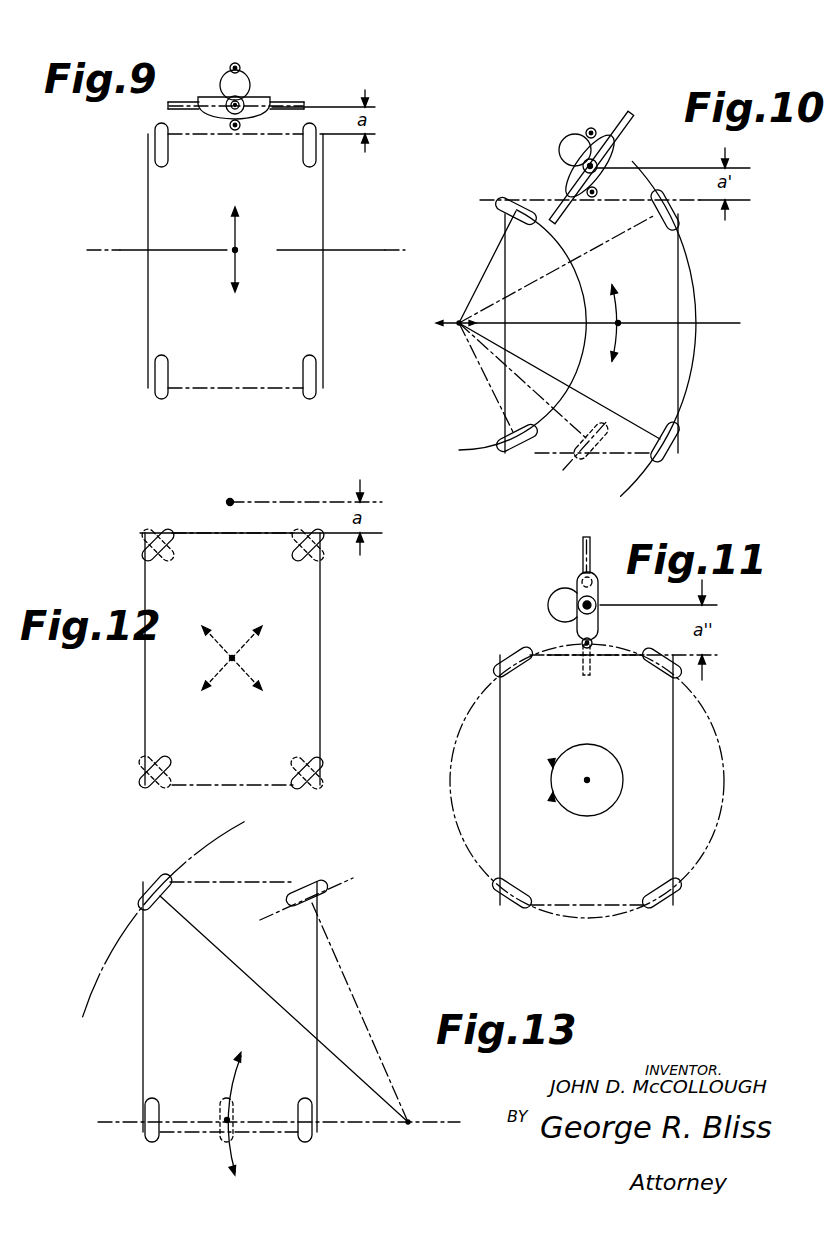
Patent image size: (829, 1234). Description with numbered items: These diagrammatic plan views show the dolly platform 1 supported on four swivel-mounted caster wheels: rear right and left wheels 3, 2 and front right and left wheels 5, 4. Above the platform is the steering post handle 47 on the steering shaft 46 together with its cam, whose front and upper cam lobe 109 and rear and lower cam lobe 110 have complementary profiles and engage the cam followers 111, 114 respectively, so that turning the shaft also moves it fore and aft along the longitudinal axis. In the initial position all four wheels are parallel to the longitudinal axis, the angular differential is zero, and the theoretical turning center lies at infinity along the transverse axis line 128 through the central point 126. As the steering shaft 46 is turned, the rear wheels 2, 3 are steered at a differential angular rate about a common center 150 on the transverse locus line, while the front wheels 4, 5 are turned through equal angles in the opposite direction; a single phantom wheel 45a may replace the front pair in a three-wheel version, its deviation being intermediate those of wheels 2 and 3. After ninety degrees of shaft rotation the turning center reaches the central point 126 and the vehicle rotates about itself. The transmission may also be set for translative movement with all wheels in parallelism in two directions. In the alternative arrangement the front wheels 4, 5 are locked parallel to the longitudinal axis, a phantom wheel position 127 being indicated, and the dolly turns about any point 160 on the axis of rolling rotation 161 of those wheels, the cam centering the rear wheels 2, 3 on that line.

In FIG. 9, the platform 1 is at (323, 252).
In FIG. 12, the platform 1 is at (320, 684).
In FIG. 11, the platform 1 is at (675, 803).
In FIG. 13, the platform 1 is at (140, 1022).
In FIG. 9, the rear left wheel 2 is at (316, 160).
In FIG. 10, the rear left wheel 2 is at (675, 222).
In FIG. 12, the rear left wheel 2 is at (322, 552).
In FIG. 11, the rear left wheel 2 is at (667, 676).
In FIG. 13, the rear left wheel 2 is at (318, 897).
In FIG. 9, the rear right wheel 3 is at (155, 160).
In FIG. 10, the rear right wheel 3 is at (509, 203).
In FIG. 12, the rear right wheel 3 is at (170, 543).
In FIG. 11, the rear right wheel 3 is at (505, 675).
In FIG. 13, the rear right wheel 3 is at (143, 897).
In FIG. 9, the front left wheel 4 is at (316, 378).
In FIG. 10, the front left wheel 4 is at (668, 455).
In FIG. 12, the front left wheel 4 is at (320, 770).
In FIG. 11, the front left wheel 4 is at (650, 895).
In FIG. 13, the front left wheel 4 is at (312, 1135).
In FIG. 9, the front right wheel 5 is at (157, 394).
In FIG. 10, the front right wheel 5 is at (511, 448).
In FIG. 12, the front right wheel 5 is at (155, 784).
In FIG. 11, the front right wheel 5 is at (514, 905).
In FIG. 13, the front right wheel 5 is at (147, 1140).
In FIG. 9, the steering shaft 46 is at (242, 100).
In FIG. 10, the steering shaft 46 is at (583, 166).
In FIG. 12, the steering shaft 46 is at (232, 498).
In FIG. 11, the steering shaft 46 is at (596, 607).
In FIG. 9, the steering post handle 47 is at (186, 104).
In FIG. 10, the steering post handle 47 is at (621, 112).
In FIG. 11, the steering post handle 47 is at (583, 548).
In FIG. 9, the front cam lobe 109 is at (264, 116).
In FIG. 10, the front cam lobe 109 is at (612, 147).
In FIG. 11, the front cam lobe 109 is at (592, 572).
In FIG. 9, the rear cam lobe 110 is at (224, 77).
In FIG. 10, the rear cam lobe 110 is at (560, 142).
In FIG. 11, the rear cam lobe 110 is at (552, 605).
In FIG. 9, the cam follower 111 is at (236, 130).
In FIG. 10, the cam follower 111 is at (593, 197).
In FIG. 11, the cam follower 111 is at (589, 648).
In FIG. 9, the cam follower 114 is at (240, 66).
In FIG. 10, the cam follower 114 is at (591, 128).
In FIG. 11, the cam follower 114 is at (578, 582).
In FIG. 9, the central point 126 is at (238, 250).
In FIG. 10, the central point 126 is at (621, 323).
In FIG. 12, the central point 126 is at (236, 659).
In FIG. 11, the central point 126 is at (589, 780).
In FIG. 13, the phantom wheel position 127 is at (230, 1118).
In FIG. 9, the transverse axis line 128 is at (105, 250).
In FIG. 10, the common center 150 is at (457, 327).
In FIG. 10, the single wheel 45a is at (592, 452).
In FIG. 13, the point 160 is at (410, 1121).
In FIG. 13, the axis of rolling rotation 161 is at (112, 1120).